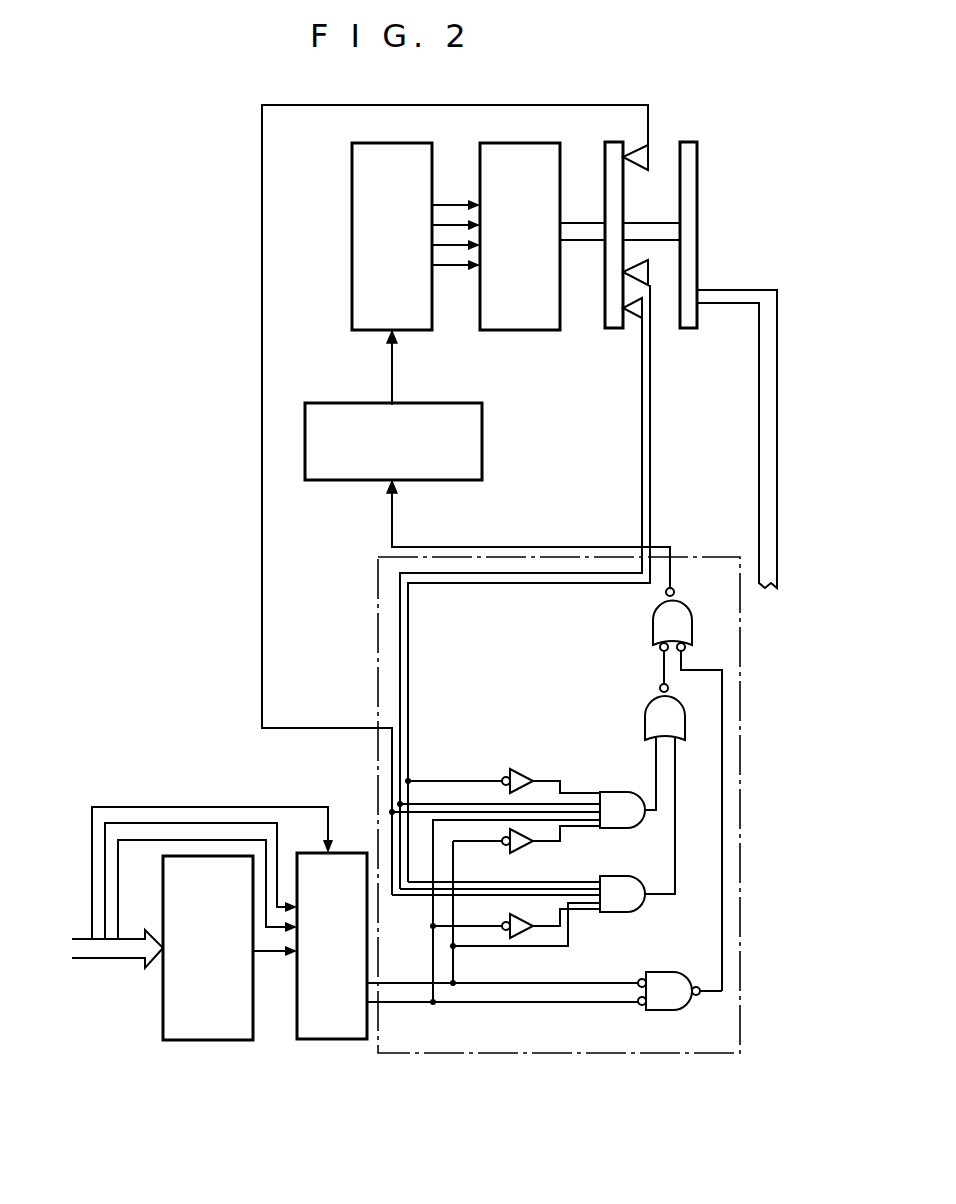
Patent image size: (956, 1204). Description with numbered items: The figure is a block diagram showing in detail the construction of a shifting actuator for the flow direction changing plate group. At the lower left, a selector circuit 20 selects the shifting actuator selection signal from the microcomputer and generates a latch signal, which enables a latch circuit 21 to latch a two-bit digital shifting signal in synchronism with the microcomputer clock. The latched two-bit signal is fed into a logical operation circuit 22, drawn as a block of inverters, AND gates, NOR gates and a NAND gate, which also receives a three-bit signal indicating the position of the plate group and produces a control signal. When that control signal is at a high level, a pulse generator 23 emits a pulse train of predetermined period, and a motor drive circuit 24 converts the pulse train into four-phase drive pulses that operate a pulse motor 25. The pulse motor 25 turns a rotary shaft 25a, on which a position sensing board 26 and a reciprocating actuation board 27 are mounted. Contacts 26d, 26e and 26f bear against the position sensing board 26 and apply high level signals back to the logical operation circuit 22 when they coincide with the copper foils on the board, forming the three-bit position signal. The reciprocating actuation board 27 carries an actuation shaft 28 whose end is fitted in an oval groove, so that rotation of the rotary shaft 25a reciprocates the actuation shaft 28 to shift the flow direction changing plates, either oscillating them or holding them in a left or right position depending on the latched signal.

The selector circuit 20 is at (223, 1040).
The latch circuit 21 is at (344, 1040).
The logical operation circuit 22 is at (590, 1055).
The pulse generator 23 is at (483, 437).
The motor drive circuit 24 is at (388, 143).
The pulse motor 25 is at (518, 143).
The rotary shaft 25a is at (580, 223).
The position sensing board 26 is at (612, 308).
The contact 26d is at (645, 155).
The contact 26e is at (648, 277).
The contact 26f is at (636, 318).
The reciprocating actuation board 27 is at (690, 320).
The actuation shaft 28 is at (758, 432).